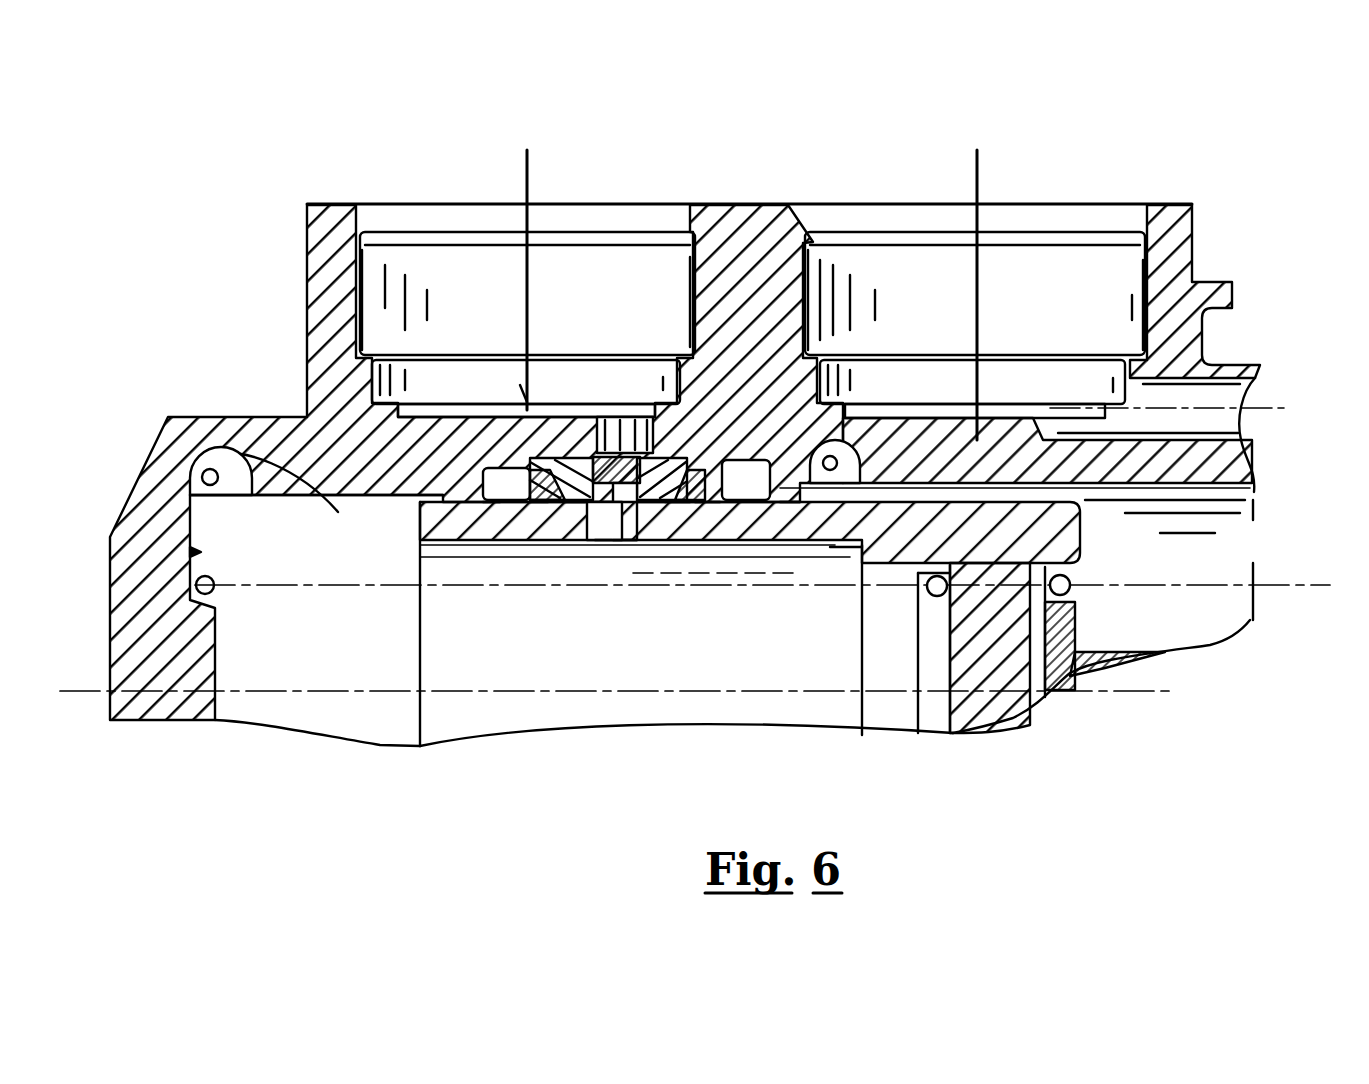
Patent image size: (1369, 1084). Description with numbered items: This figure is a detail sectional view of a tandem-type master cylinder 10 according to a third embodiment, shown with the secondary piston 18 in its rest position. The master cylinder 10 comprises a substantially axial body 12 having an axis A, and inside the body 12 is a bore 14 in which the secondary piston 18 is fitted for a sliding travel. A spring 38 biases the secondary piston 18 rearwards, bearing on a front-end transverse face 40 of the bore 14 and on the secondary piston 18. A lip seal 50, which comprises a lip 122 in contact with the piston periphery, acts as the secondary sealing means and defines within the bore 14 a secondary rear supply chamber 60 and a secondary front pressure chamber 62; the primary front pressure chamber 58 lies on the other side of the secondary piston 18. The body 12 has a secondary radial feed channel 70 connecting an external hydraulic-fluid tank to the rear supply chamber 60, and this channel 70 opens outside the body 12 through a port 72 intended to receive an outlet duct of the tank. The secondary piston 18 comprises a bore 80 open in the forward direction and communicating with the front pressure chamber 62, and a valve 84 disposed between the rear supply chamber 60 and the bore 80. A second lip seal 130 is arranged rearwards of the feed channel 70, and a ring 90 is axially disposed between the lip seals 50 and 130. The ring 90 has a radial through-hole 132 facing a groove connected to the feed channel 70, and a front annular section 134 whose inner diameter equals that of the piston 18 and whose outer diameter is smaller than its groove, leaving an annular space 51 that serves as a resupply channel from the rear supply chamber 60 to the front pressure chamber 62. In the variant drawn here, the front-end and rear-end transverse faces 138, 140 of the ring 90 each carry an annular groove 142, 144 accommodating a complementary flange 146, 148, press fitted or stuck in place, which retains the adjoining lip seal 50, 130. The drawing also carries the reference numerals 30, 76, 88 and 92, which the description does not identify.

The master cylinder 10 is at (1276, 213).
The body 12 is at (152, 480).
The bore 14 is at (264, 505).
The secondary piston 18 is at (1000, 673).
The rotor 30 is at (420, 532).
The spring 38 is at (278, 585).
The front-end transverse face 40 is at (190, 551).
The lip seal 50 is at (466, 465).
The annular space 51 is at (510, 379).
The primary front pressure chamber 58 is at (1245, 627).
The secondary rear supply chamber 60 is at (695, 400).
The secondary front pressure chamber 62 is at (213, 466).
The secondary radial feed channel 70 is at (632, 455).
The port 72 is at (376, 205).
The groove 76 is at (150, 430).
The bore of the secondary piston 80 is at (840, 547).
The valve 84 is at (622, 505).
The passage 88 is at (600, 505).
The ring 90 is at (588, 460).
The O-ring 92 is at (856, 485).
The lip 122 is at (492, 505).
The lip seal 130 is at (790, 505).
The radial through-hole 132 is at (600, 455).
The front annular section 134 is at (545, 458).
The front-end transverse face 138 is at (540, 470).
The rear-end transverse face 140 is at (742, 405).
The annular groove 142 is at (575, 505).
The annular groove 144 is at (677, 505).
The complementary flange 146 is at (540, 505).
The complementary flange 148 is at (707, 505).
The axis A is at (1143, 703).